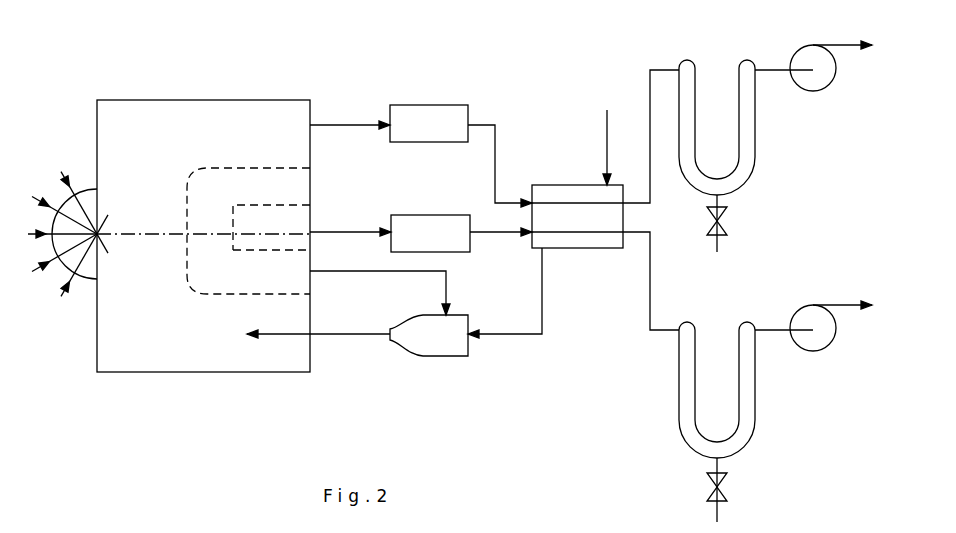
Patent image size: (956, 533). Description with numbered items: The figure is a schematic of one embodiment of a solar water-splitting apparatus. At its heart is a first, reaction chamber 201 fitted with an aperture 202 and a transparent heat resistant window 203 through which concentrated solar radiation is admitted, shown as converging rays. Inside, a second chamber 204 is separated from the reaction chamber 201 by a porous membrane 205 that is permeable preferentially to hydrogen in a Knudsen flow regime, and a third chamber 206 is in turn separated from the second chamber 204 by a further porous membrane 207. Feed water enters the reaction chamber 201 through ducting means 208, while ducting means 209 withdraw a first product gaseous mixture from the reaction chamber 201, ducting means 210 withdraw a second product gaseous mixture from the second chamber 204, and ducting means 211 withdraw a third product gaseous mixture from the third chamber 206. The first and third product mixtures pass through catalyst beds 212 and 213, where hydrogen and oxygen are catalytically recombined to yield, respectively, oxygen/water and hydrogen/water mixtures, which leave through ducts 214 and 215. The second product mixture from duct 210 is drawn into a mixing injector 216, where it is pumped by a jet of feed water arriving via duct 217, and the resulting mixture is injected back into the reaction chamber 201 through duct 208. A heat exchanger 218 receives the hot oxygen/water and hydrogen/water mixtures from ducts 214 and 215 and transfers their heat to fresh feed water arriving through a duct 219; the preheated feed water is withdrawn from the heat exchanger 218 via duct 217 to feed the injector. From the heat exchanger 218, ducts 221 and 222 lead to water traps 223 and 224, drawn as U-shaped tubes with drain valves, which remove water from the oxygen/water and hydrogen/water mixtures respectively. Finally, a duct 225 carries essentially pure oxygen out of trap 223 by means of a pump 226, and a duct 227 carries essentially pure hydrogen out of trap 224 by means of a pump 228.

The reaction chamber 201 is at (146, 100).
The aperture 202 is at (108, 222).
The transparent heat resistant window 203 is at (62, 206).
The second chamber 204 is at (243, 181).
The porous membrane 205 is at (216, 168).
The third chamber 206 is at (263, 216).
The porous membrane 207 is at (248, 251).
The ducting means 208 is at (346, 336).
The ducting means 209 is at (336, 123).
The ducting means 210 is at (322, 273).
The ducting means 211 is at (337, 231).
The catalyst bed 212 is at (425, 105).
The catalyst bed 213 is at (425, 215).
The duct 214 is at (498, 146).
The duct 215 is at (497, 239).
The mixing injector 216 is at (439, 358).
The duct 217 is at (543, 297).
The heat exchanger 218 is at (553, 192).
The duct 219 is at (605, 137).
The duct 221 is at (650, 118).
The duct 222 is at (650, 305).
The water trap 223 is at (757, 133).
The water trap 224 is at (757, 404).
The duct 225 is at (769, 66).
The pump 226 is at (814, 45).
The duct 227 is at (770, 328).
The pump 228 is at (815, 306).